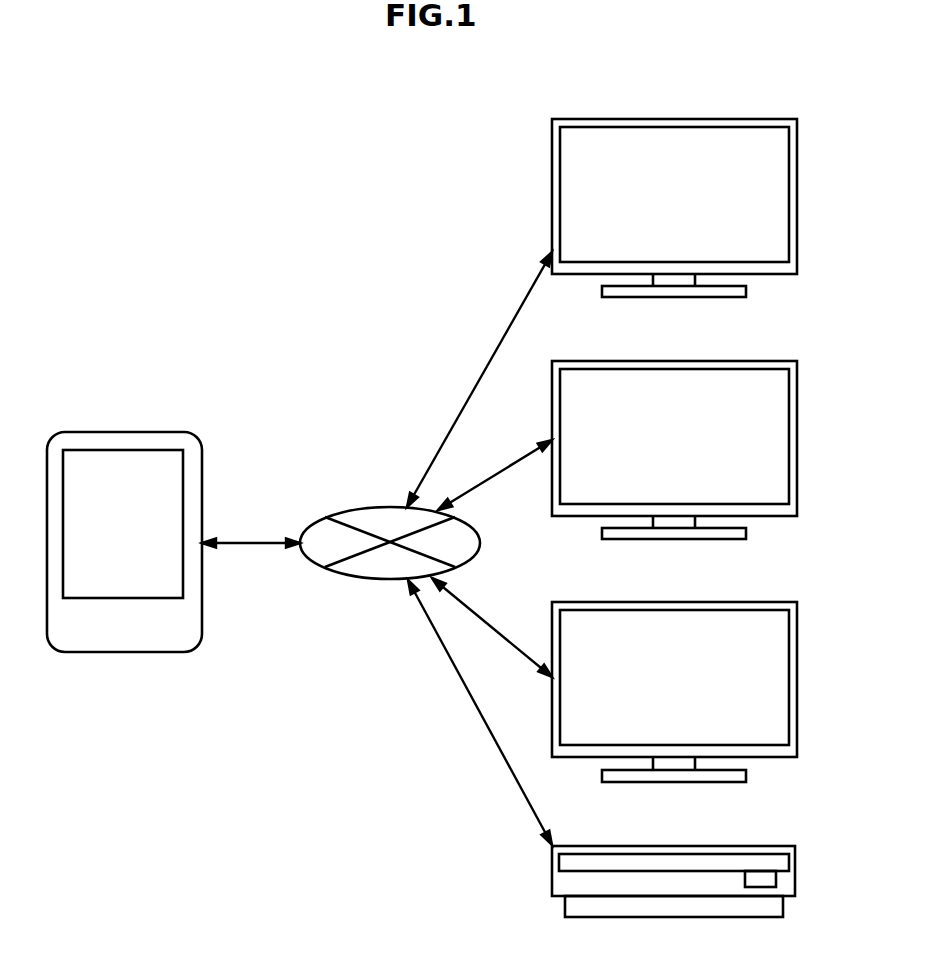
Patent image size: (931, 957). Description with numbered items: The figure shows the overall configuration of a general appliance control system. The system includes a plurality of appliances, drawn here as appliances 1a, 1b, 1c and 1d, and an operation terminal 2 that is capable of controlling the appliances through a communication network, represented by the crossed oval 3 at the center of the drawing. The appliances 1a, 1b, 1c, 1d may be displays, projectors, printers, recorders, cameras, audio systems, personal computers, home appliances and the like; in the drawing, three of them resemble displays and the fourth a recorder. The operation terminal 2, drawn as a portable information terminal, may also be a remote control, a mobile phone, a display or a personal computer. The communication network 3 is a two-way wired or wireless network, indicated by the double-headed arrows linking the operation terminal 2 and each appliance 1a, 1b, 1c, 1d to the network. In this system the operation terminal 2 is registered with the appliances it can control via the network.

The appliance 1a is at (743, 119).
The appliance 1b is at (743, 361).
The appliance 1c is at (743, 602).
The appliance 1d is at (743, 846).
The operation terminal 2 is at (157, 432).
The network 3 is at (352, 507).